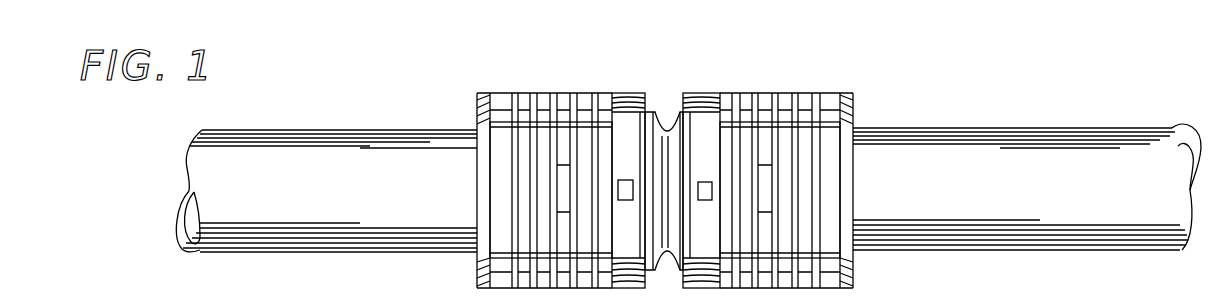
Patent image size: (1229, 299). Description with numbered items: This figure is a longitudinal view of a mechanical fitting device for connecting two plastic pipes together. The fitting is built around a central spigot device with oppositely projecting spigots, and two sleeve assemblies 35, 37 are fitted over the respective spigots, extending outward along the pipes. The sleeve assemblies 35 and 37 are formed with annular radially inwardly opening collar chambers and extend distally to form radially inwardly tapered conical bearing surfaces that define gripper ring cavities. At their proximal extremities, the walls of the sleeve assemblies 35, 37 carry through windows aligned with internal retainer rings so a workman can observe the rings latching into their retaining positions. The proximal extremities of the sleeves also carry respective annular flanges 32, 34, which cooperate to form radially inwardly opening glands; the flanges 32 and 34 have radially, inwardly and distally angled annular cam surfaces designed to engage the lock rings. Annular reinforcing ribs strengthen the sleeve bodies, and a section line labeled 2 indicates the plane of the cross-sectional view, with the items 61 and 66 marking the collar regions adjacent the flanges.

The section line 2- 2 is at (462, 188).
The annular flange 32 is at (622, 180).
The annular flange 34 is at (706, 182).
The sleeve assembly 35 is at (481, 101).
The sleeve assembly 37 is at (855, 108).
The first collar 61 is at (614, 94).
The second collar 66 is at (722, 96).